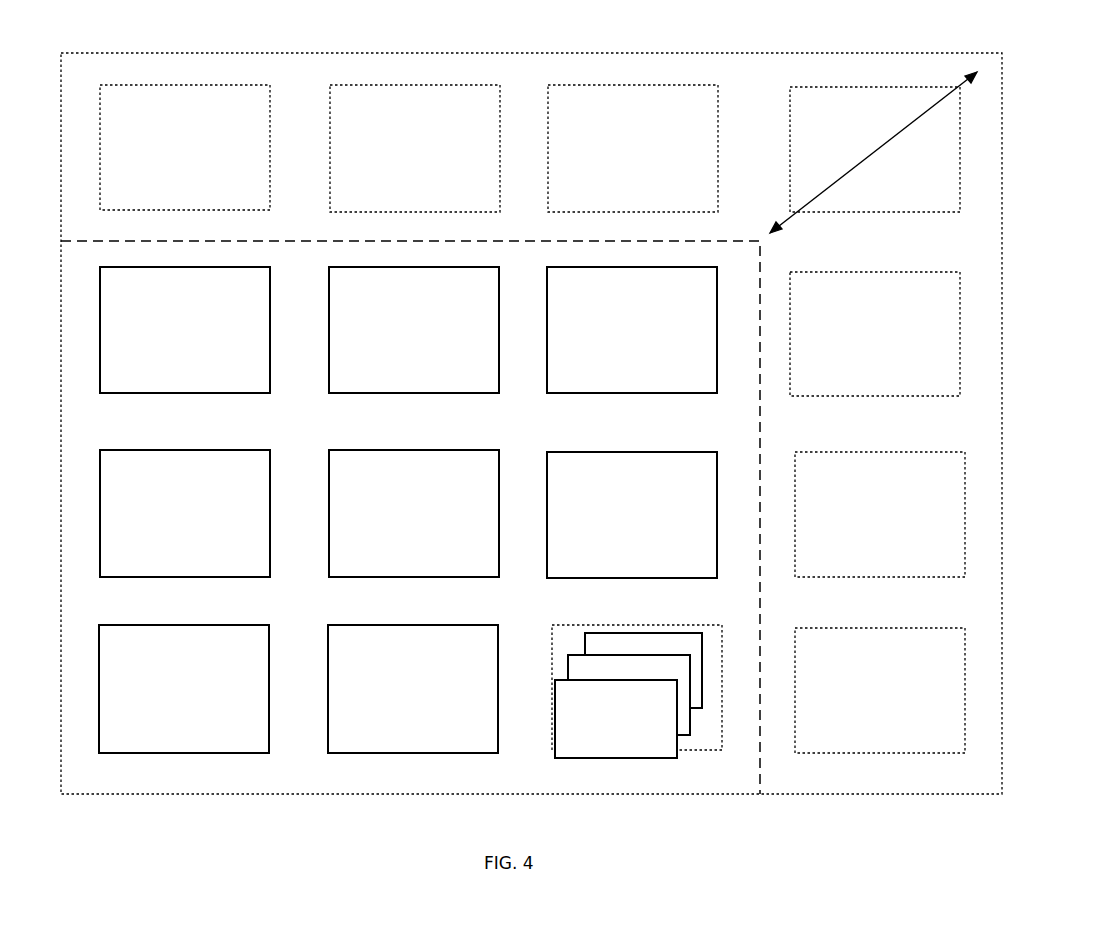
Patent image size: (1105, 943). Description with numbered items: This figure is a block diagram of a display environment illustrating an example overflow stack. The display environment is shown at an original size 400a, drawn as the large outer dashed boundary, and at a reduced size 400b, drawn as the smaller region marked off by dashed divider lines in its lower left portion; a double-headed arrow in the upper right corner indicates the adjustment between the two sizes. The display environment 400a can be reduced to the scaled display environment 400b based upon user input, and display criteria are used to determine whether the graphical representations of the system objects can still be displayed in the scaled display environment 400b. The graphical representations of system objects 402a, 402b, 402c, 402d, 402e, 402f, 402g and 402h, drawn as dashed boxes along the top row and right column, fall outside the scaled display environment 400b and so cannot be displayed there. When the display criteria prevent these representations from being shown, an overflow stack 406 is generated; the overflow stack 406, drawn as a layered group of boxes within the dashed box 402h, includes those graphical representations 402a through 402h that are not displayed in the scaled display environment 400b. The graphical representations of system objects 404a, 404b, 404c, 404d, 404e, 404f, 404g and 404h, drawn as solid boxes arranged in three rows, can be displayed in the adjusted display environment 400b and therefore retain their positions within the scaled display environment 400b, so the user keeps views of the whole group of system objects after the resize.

The display environment 400a is at (1003, 83).
The scaled display environment 400b is at (762, 275).
The graphical representation of system object 402a is at (270, 98).
The graphical representation of system object 402b is at (500, 98).
The graphical representation of system object 402c is at (718, 104).
The graphical representation of system object 402d is at (877, 214).
The graphical representation of system object 402e is at (877, 397).
The graphical representation of system object 402f is at (887, 578).
The graphical representation of system object 402g is at (883, 755).
The graphical representation of system object 402h is at (655, 625).
The graphical representation of system object 404a is at (207, 393).
The graphical representation of system object 404b is at (413, 393).
The graphical representation of system object 404c is at (657, 393).
The graphical representation of system object 404d is at (187, 577).
The graphical representation of system object 404e is at (420, 577).
The graphical representation of system object 404f is at (627, 578).
The graphical representation of system object 404g is at (190, 753).
The graphical representation of system object 404h is at (420, 753).
The overflow stack 406 is at (627, 758).